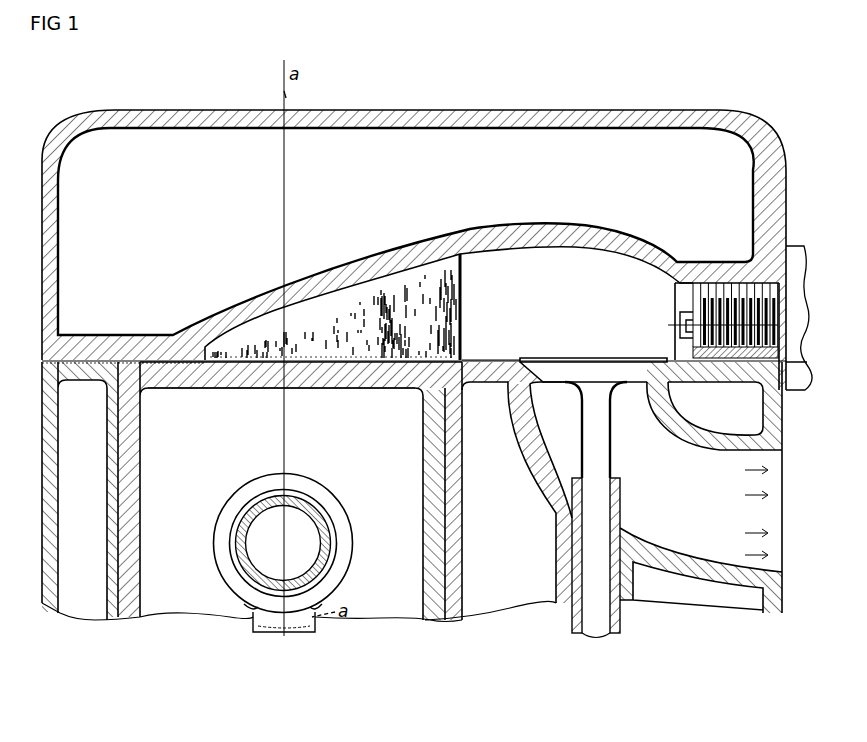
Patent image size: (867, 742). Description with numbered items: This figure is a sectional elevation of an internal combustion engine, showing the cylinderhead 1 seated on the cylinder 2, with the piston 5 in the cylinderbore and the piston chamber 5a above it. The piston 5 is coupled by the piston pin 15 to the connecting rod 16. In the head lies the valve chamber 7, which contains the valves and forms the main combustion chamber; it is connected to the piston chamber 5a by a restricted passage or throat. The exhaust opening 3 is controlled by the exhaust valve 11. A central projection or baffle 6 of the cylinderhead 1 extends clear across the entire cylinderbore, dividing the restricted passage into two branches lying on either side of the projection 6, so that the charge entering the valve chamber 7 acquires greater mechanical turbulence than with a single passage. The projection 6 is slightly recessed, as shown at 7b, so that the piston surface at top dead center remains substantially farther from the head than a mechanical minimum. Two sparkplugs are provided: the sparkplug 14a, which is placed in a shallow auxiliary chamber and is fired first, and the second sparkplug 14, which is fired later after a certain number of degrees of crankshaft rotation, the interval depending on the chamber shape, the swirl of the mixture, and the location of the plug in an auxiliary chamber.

The cylinderhead 1 is at (381, 84).
The cylinder 2 is at (32, 365).
The exhaust opening 3 is at (756, 512).
The piston 5 is at (358, 389).
The piston chamber 5a is at (281, 424).
The central projection or baffle 6 is at (473, 293).
The valve chamber 7 is at (529, 323).
The recess 7b is at (257, 372).
The exhaust valve 11 is at (600, 343).
The second sparkplug 14 is at (723, 321).
The sparkplug 14a is at (680, 313).
The piston pin 15 is at (306, 523).
The connecting rod 16 is at (354, 514).